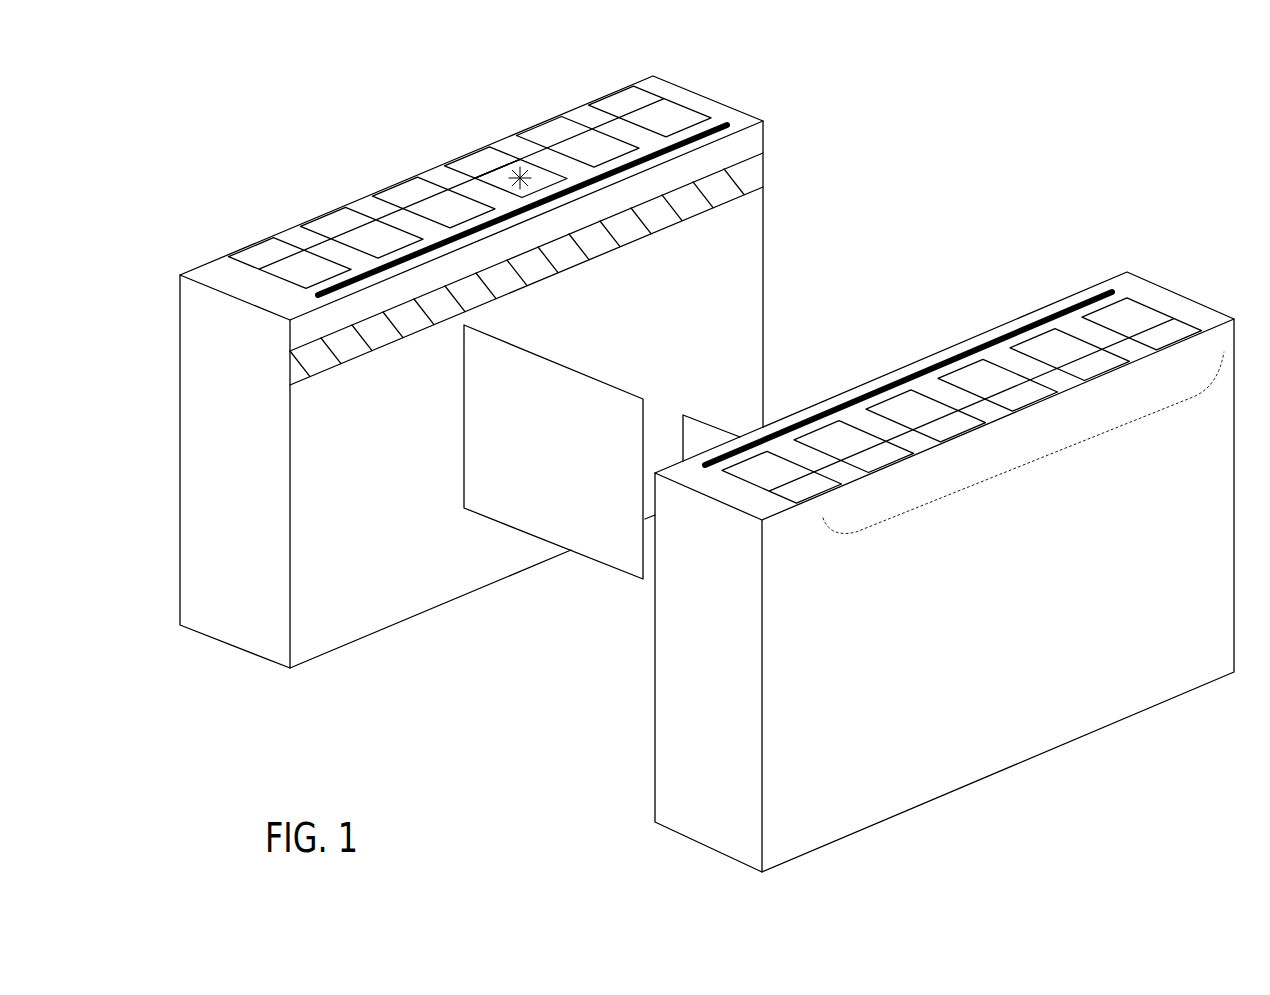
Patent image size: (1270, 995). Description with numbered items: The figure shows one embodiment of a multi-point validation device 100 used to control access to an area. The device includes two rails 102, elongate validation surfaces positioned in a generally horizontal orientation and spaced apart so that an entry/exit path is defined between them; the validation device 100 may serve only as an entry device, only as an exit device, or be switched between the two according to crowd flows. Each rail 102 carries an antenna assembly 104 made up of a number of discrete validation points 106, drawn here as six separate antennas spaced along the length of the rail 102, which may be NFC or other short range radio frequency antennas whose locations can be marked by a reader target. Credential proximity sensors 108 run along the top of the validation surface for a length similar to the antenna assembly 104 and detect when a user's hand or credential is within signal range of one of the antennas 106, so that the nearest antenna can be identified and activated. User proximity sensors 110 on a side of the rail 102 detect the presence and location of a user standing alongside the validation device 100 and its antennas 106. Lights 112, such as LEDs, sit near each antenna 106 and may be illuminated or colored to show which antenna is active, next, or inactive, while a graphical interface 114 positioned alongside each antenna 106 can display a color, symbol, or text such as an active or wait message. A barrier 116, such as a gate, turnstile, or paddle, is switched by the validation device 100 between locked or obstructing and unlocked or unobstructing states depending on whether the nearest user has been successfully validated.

The multi-point validation device 100 is at (1229, 63).
The rail 102 is at (457, 351).
The antenna assembly 104 is at (944, 545).
The validation point 106 is at (1133, 310).
The credential proximity sensor 108 is at (716, 119).
The user proximity sensor 110 is at (397, 343).
The light 112 is at (518, 153).
The graphical interface 114 is at (478, 150).
The barrier 116 is at (630, 405).